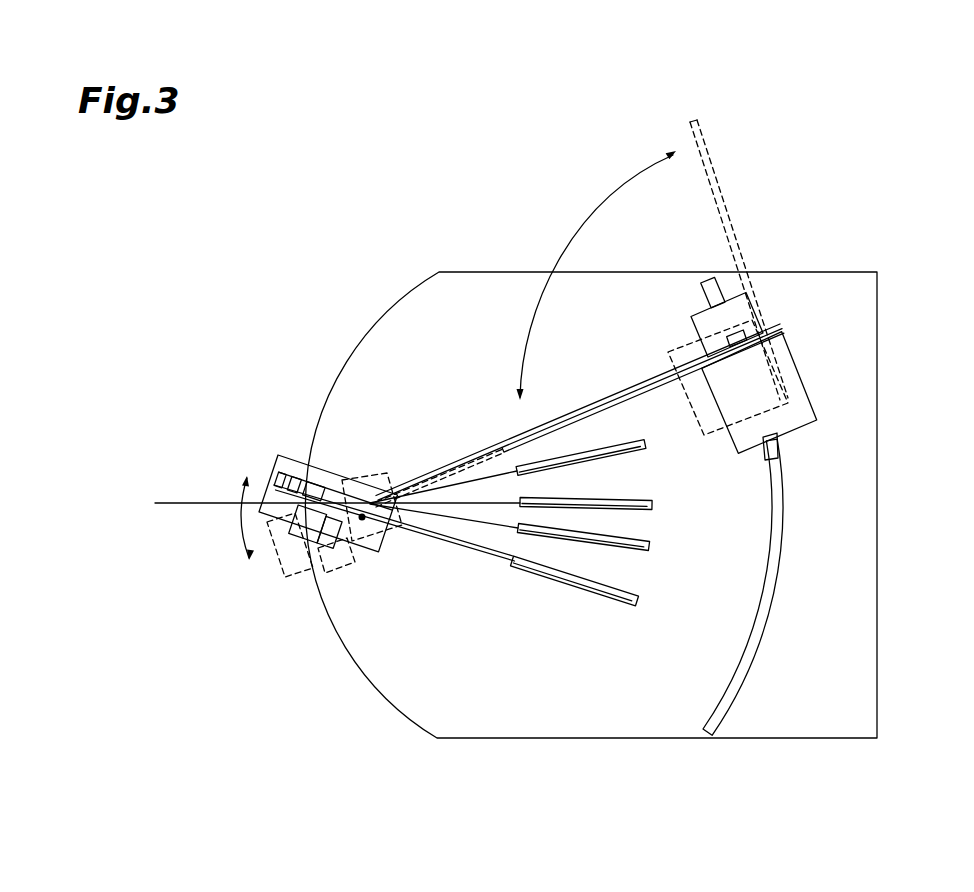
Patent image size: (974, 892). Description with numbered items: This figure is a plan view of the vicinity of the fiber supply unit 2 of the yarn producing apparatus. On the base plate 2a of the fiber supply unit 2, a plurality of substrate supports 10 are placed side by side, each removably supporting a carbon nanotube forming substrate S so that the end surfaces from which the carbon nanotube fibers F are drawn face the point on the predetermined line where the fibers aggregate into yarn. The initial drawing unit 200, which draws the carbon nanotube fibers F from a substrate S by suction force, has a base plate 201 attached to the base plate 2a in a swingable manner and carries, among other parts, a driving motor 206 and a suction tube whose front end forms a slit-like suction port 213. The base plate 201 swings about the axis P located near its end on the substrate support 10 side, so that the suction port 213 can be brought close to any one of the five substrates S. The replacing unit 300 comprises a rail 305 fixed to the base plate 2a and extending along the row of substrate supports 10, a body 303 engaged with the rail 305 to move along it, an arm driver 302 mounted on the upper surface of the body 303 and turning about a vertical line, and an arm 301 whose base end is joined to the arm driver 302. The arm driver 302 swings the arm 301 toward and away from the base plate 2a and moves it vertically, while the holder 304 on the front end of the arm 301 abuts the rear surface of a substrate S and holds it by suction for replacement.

The fiber supply unit 2 is at (458, 266).
The base plate 2a is at (406, 312).
The substrate support 10 is at (619, 489).
The initial drawing unit 200 is at (266, 470).
The base plate 201 is at (297, 455).
The driving motor 206 is at (305, 527).
The suction port 213 is at (513, 562).
The replacing unit 300 is at (808, 390).
The arm 301 is at (727, 208).
The arm driver 302 is at (818, 413).
The body 303 is at (740, 293).
The holder 304 is at (541, 422).
The rail 305 is at (722, 703).
The carbon nanotube fibers F is at (183, 503).
The axis P is at (363, 520).
The carbon nanotube forming substrate S is at (650, 508).